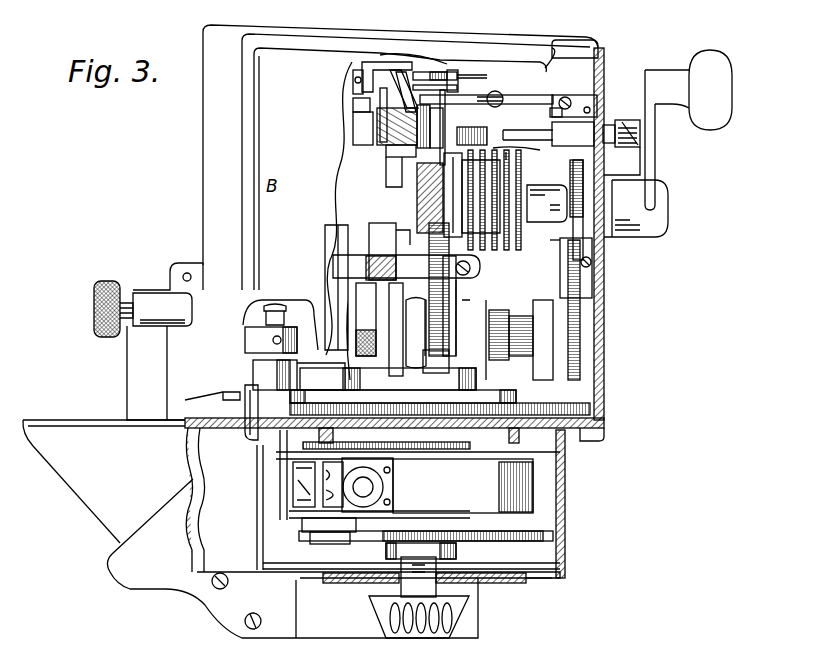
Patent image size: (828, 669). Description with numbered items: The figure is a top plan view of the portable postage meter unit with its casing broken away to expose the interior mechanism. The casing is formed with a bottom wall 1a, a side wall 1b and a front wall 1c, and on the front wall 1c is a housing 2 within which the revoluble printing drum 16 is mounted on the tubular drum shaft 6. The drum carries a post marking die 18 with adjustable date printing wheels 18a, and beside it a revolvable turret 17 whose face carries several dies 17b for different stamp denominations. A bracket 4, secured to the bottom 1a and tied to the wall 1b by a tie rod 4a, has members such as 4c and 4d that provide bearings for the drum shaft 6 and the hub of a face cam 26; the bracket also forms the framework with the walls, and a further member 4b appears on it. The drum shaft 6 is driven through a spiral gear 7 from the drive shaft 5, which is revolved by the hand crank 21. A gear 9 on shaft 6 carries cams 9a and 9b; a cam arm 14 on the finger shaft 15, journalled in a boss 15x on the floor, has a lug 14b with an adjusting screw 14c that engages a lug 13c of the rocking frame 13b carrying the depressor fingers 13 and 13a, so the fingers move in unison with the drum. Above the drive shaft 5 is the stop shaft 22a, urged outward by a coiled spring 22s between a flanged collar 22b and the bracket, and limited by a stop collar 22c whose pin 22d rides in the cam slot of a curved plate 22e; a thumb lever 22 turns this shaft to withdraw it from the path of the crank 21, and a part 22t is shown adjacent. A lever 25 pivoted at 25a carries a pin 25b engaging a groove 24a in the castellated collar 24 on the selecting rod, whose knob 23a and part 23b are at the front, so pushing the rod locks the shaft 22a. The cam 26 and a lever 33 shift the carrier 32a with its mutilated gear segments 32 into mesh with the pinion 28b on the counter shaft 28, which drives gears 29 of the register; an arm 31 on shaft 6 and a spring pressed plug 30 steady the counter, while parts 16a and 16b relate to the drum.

The bottom wall 1a is at (265, 238).
The side wall 1b is at (600, 386).
The front wall 1c is at (580, 437).
The housing 2 is at (565, 508).
The bracket 4 is at (368, 62).
The tie rod 4a is at (380, 100).
The post 4b is at (380, 95).
The bracket member 4c is at (432, 233).
The bracket member 4d is at (377, 125).
The drive shaft 5 is at (543, 190).
The printing drum shaft 6 is at (449, 330).
The spiral gear 7 is at (400, 233).
The gear 9 is at (440, 399).
The cam 9a is at (403, 397).
The cam 9b is at (388, 379).
The depressor finger 13 is at (349, 569).
The depressor finger 13a is at (290, 452).
The rocking frame 13b is at (270, 531).
The lug 13c is at (248, 437).
The cam arm 14 is at (253, 362).
The lug 14b is at (238, 376).
The adjusting screw 14c is at (223, 396).
The shaft 15 is at (264, 310).
The boss 15x is at (255, 339).
The printing drum 16 is at (533, 495).
The rack bar 16a is at (512, 541).
The rack bar 16b is at (418, 440).
The turret 17 is at (293, 500).
The dies 17b is at (293, 483).
The post marking die 18 is at (368, 495).
The date printing wheels 18a is at (363, 507).
The hand crank 21 is at (710, 130).
The lever 22 is at (622, 128).
The shaft 22a is at (483, 108).
The flanged collar 22b is at (420, 160).
The stop collar 22c is at (566, 140).
The pin 22d is at (575, 95).
The curved plate 22e is at (560, 100).
The cover part 22t is at (570, 100).
The coiled spring 22s is at (380, 148).
The knob 23a is at (388, 627).
The bell support 23b is at (456, 551).
The castellated collar 24 is at (447, 82).
The groove 24a is at (470, 80).
The lever 25 is at (415, 72).
The pivot 25a is at (353, 78).
The pin 25b is at (432, 78).
The face cam 26 is at (475, 140).
The shaft 28 is at (380, 262).
The pinion 28b is at (560, 236).
The gears 29 is at (580, 305).
The spring pressed plug 30 is at (356, 302).
The arm 31 is at (444, 328).
The mutilated gear segments 32 is at (478, 262).
The carrier 32a is at (462, 165).
The lever 33 is at (510, 156).